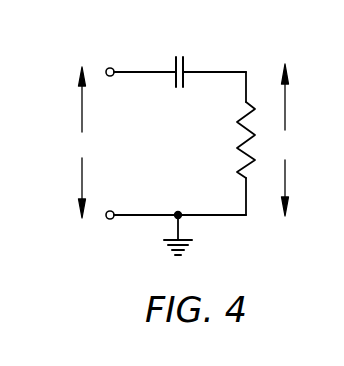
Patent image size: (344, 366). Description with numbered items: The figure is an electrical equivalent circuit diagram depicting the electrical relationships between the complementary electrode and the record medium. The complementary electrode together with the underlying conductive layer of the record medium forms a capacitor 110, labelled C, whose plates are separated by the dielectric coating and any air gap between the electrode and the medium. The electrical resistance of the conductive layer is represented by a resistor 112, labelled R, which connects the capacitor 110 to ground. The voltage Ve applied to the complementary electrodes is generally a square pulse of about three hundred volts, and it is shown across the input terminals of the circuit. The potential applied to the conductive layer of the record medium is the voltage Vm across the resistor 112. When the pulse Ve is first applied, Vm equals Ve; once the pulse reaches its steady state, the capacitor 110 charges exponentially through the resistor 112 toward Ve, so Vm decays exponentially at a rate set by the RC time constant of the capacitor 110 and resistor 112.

The capacitor 110 is at (198, 72).
The resistor 112 is at (222, 141).
The capacitor C is at (199, 43).
The resistor R is at (247, 160).
The complementary electrode voltage Ve is at (86, 142).
The record medium voltage Vm is at (290, 140).